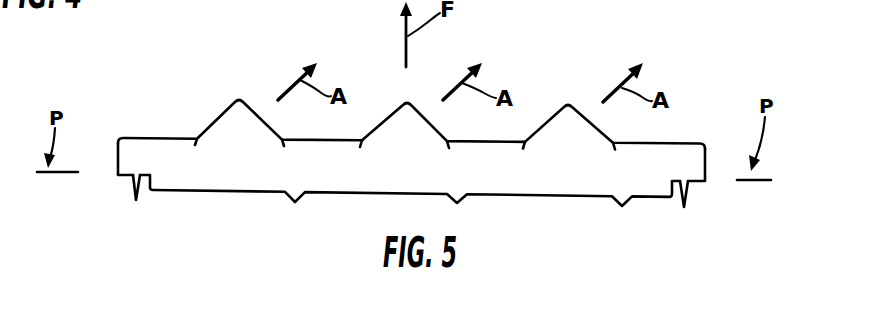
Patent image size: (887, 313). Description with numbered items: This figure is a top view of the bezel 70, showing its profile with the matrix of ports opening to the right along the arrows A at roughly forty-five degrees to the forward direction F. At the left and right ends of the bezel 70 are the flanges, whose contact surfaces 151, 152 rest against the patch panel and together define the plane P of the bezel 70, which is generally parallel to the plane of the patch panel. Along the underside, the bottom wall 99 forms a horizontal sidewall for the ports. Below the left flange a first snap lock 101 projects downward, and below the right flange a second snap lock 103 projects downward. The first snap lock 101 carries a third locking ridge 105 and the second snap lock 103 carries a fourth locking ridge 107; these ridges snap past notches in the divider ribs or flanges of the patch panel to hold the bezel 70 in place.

The bezel 70 is at (170, 100).
The bottom wall 99 is at (415, 181).
The surface of the first flange 151 is at (117, 173).
The surface of the second flange 152 is at (707, 181).
The first snap lock 101 is at (135, 191).
The second snap lock 103 is at (690, 205).
The third locking ridge 105 is at (124, 182).
The fourth locking ridge 107 is at (700, 189).